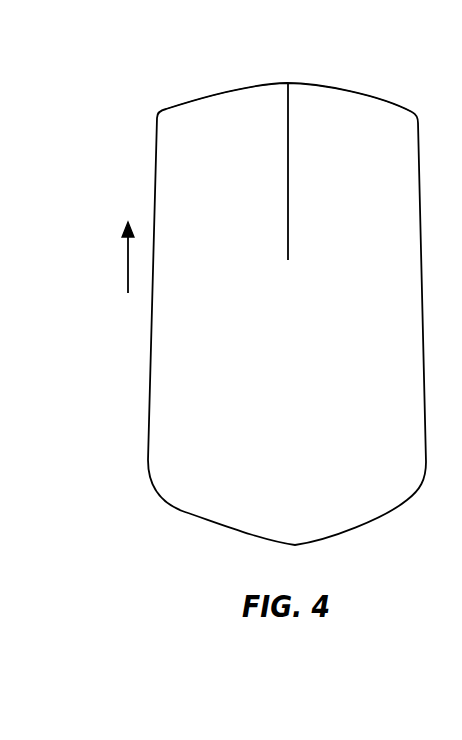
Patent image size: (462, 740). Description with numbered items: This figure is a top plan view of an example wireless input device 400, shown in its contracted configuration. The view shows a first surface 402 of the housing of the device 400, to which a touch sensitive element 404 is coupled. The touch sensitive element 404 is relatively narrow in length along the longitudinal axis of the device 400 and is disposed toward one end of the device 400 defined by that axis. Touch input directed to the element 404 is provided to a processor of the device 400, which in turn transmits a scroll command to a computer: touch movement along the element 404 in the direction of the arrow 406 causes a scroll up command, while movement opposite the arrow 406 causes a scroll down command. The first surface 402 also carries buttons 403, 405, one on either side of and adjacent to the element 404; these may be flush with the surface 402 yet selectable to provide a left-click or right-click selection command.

The wireless input device 400 is at (248, 44).
The first surface 402 is at (175, 443).
The button 403 is at (233, 110).
The touch sensitive element 404 is at (290, 138).
The button 405 is at (340, 110).
The arrow 406 is at (128, 262).